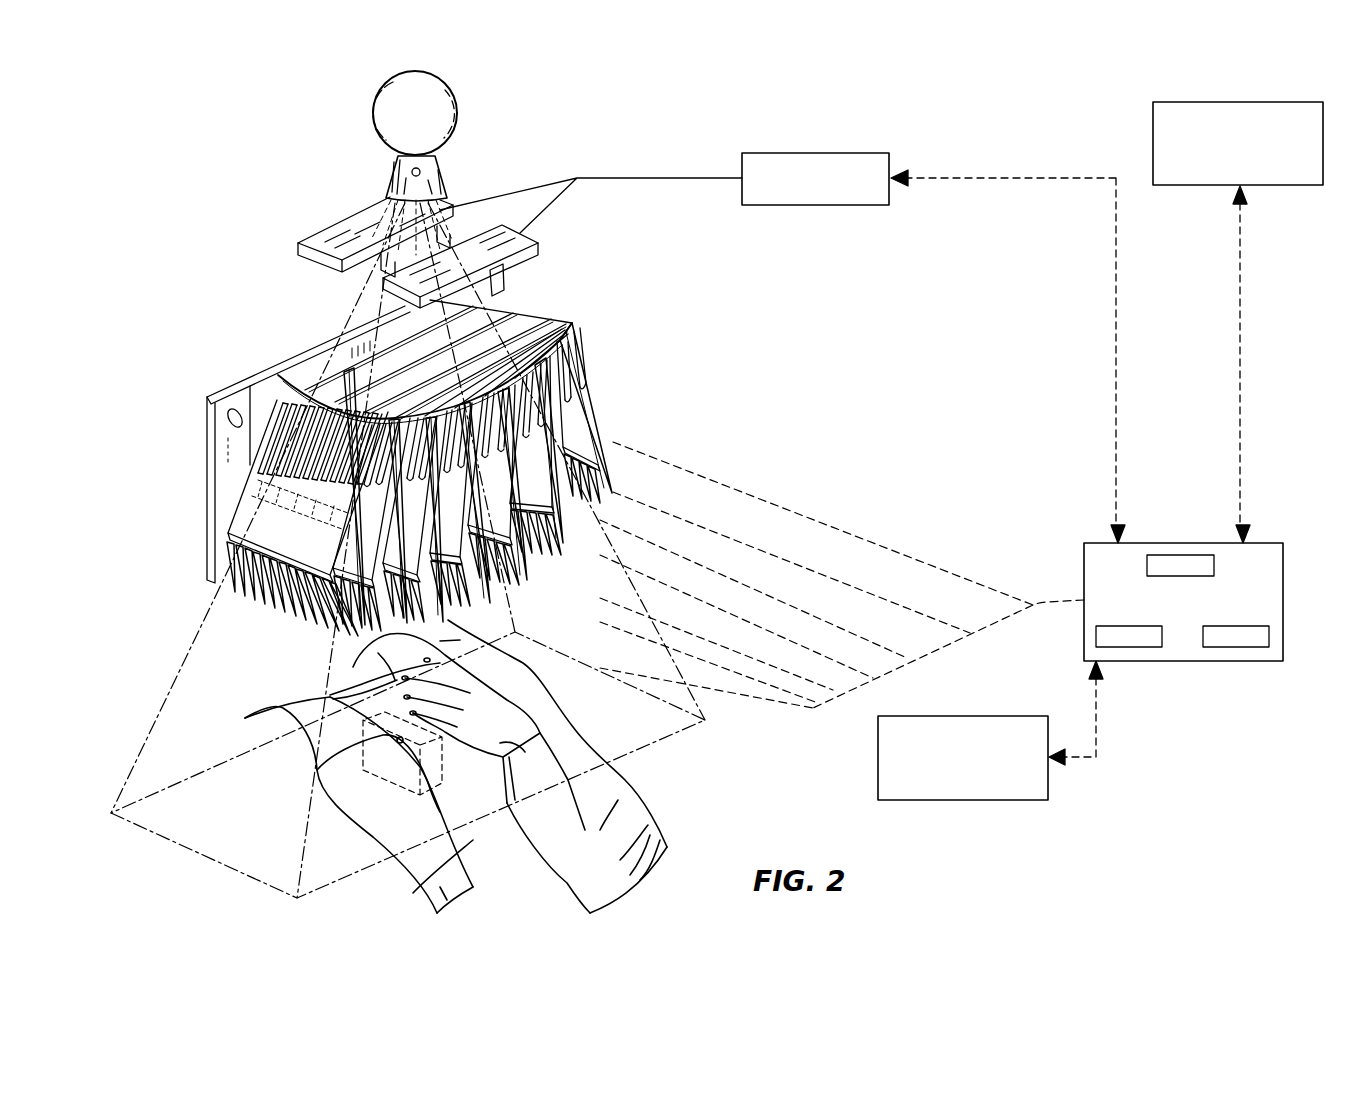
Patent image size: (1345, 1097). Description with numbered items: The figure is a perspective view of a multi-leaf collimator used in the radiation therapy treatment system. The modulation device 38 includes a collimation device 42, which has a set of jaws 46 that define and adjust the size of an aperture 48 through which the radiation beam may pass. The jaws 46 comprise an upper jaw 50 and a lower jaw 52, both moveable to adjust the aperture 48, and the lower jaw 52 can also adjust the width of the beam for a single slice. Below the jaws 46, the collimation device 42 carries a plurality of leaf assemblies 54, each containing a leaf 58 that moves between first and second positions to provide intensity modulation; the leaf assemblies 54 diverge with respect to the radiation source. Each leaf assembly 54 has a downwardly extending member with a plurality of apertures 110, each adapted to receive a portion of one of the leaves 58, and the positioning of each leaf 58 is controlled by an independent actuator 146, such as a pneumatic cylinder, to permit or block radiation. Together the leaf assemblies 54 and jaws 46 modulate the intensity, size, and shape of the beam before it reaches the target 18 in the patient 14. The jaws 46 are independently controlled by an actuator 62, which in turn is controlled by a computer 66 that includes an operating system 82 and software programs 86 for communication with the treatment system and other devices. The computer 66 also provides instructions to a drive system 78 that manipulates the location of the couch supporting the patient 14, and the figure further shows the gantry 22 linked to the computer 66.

The modulation device 38 is at (555, 128).
The jaws 46 is at (321, 188).
The collimation device 42 is at (204, 264).
The upper jaw 50 is at (317, 238).
The lower jaw 52 is at (462, 228).
The aperture 48 is at (345, 267).
The leaf assemblies 54 is at (629, 360).
The apertures 110 is at (290, 392).
The actuator 146 is at (252, 474).
The leaf 58 is at (252, 598).
The target 18 is at (397, 777).
The patient 14 is at (567, 883).
The actuator 62 is at (780, 151).
The gantry 22 is at (1205, 99).
The computer 66 is at (1285, 583).
The operating system 82 is at (1153, 561).
The software programs 86 is at (1260, 637).
The drive system 78 is at (937, 800).